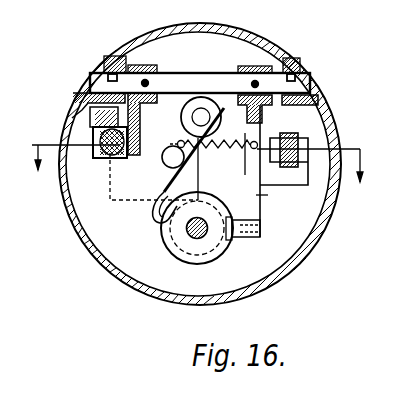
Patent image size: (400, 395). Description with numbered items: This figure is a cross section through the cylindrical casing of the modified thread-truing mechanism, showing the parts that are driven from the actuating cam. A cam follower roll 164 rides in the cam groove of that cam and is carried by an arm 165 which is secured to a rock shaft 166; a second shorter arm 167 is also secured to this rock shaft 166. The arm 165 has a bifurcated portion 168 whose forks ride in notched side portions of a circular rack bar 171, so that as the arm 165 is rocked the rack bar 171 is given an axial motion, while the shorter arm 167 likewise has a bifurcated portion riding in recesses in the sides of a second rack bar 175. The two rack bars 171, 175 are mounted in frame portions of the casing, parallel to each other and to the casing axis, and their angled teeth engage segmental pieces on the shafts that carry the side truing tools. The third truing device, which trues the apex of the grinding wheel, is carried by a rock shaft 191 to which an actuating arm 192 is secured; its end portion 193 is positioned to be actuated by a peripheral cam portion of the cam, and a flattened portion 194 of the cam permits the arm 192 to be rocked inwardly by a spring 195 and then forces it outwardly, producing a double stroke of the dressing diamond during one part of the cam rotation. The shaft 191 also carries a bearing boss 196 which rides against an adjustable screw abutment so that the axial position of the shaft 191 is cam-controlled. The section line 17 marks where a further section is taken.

The section line 17- 17 is at (200, 184).
The cam follower roll 164 is at (236, 238).
The arm 165 is at (259, 194).
The rock shaft 166 is at (210, 72).
The second shorter arm 167 is at (106, 142).
The bifurcated portion 168 is at (302, 172).
The circular rack bar 171 is at (292, 137).
The rack bar 175 is at (176, 104).
The rock shaft 191 is at (198, 112).
The actuating arm 192 is at (157, 190).
The end portion 193 is at (173, 240).
The flattened portion 194 is at (181, 252).
The spring 195 is at (226, 151).
The bearing boss 196 is at (166, 152).